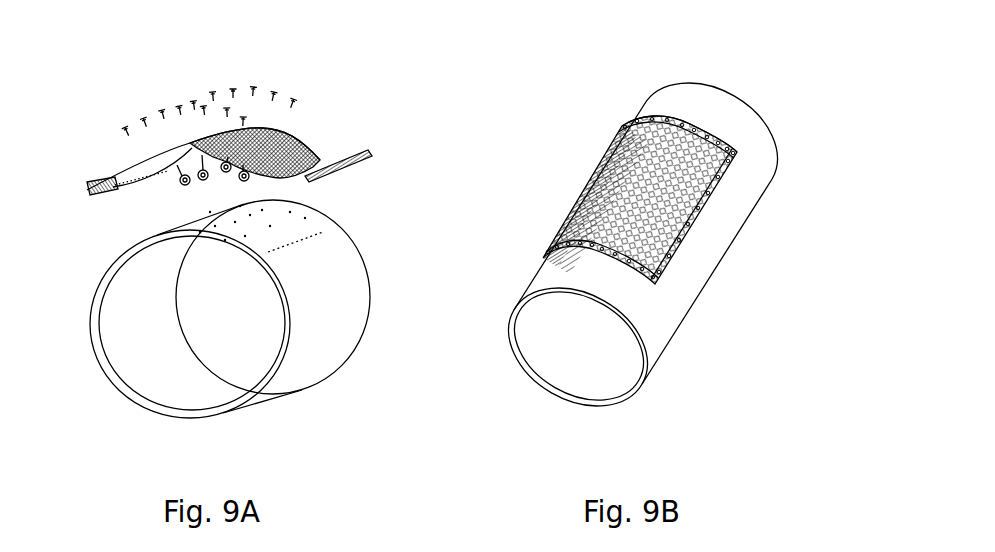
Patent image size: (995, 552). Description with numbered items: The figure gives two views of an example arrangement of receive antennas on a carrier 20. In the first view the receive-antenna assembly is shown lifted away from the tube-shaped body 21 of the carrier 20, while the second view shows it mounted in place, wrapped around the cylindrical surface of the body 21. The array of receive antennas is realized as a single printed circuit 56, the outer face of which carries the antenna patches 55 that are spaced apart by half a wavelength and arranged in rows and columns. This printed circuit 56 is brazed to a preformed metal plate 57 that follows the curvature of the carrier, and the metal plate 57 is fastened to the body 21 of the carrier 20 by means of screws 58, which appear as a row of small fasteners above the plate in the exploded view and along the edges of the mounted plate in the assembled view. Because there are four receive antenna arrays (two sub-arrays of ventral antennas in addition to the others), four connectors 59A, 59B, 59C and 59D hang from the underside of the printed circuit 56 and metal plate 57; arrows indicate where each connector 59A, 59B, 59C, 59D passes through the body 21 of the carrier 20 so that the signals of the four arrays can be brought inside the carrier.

In FIG. 9A, the carrier 20 is at (187, 325).
In FIG. 9B, the carrier 20 is at (611, 256).
In FIG. 9A, the body 21 is at (297, 389).
In FIG. 9B, the body 21 is at (687, 327).
In FIG. 9B, the patches 55 is at (615, 153).
In FIG. 9A, the printed circuit 56 is at (297, 143).
In FIG. 9B, the printed circuit 56 is at (622, 160).
In FIG. 9A, the preformed metal plate 57 is at (317, 152).
In FIG. 9B, the preformed metal plate 57 is at (625, 124).
In FIG. 9A, the screws 58 is at (289, 106).
In FIG. 9B, the screws 58 is at (695, 123).
In FIG. 9A, the connector 59A is at (168, 195).
In FIG. 9A, the connector 59B is at (194, 193).
In FIG. 9A, the connector 59C is at (240, 188).
In FIG. 9A, the connector 59D is at (264, 186).